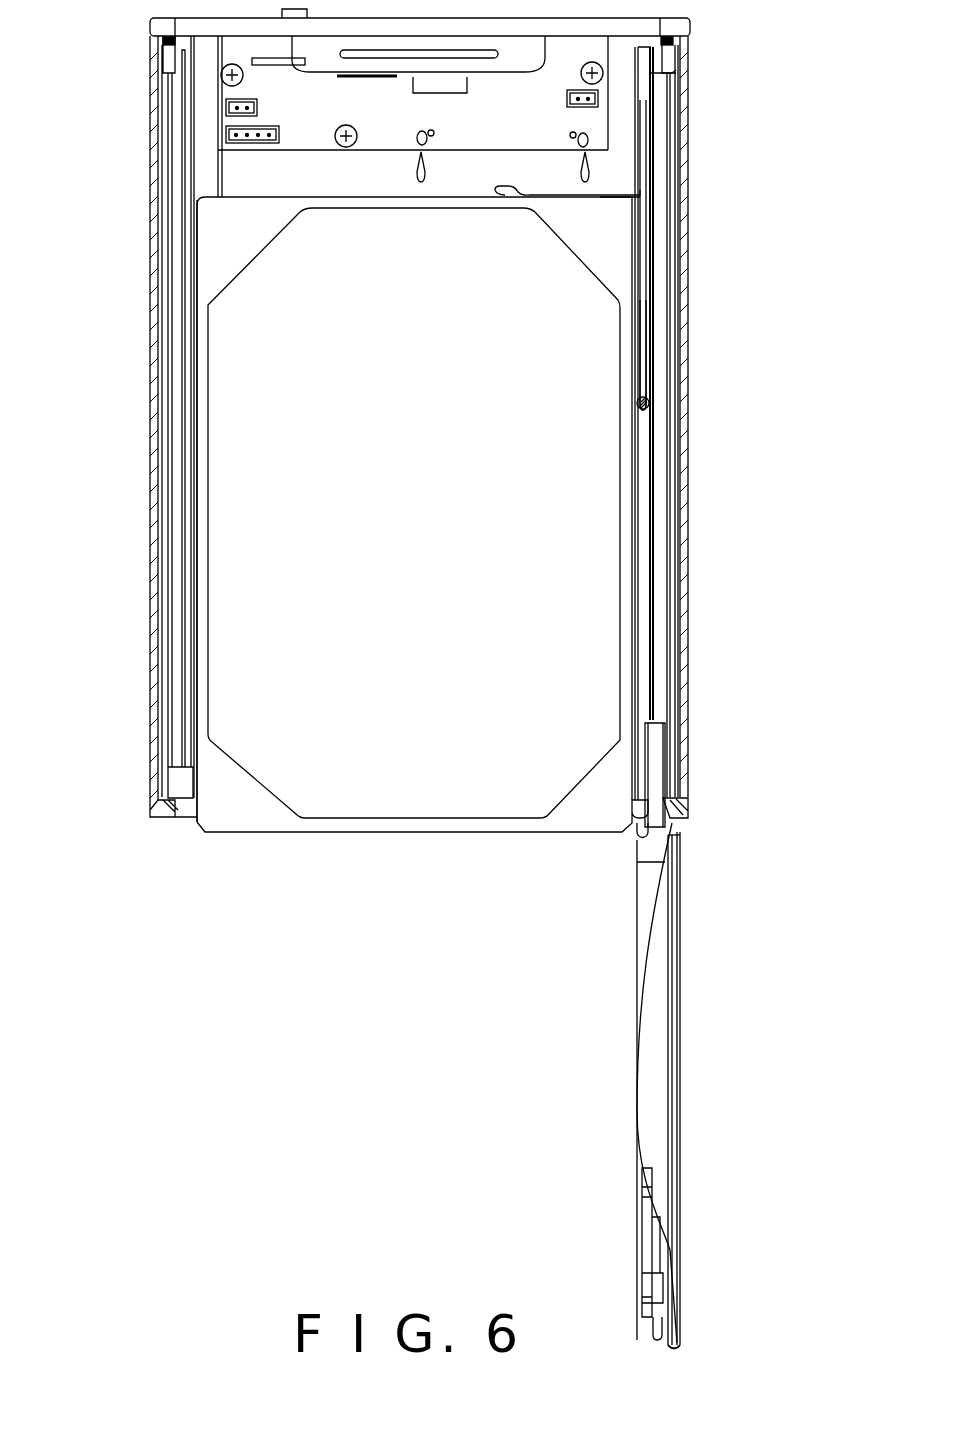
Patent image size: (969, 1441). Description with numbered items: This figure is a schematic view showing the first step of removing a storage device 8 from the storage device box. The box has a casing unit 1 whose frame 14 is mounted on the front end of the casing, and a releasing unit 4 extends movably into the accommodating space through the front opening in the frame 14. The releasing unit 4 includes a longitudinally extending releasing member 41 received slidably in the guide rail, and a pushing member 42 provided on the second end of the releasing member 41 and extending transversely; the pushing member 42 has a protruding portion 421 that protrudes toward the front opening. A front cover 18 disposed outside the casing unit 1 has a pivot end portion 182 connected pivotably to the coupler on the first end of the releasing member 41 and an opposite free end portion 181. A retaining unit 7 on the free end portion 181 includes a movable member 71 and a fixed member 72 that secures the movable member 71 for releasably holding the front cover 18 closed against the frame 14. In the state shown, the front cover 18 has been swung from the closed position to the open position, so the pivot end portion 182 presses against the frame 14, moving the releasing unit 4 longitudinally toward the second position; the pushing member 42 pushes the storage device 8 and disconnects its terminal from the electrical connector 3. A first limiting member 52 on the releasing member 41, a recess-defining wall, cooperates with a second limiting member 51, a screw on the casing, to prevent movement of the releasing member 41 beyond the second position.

The casing unit 1 is at (150, 572).
The frame 14 is at (152, 812).
The electrical connector 3 is at (460, 167).
The releasing unit 4 is at (642, 498).
The releasing member 41 is at (642, 623).
The pushing member 42 is at (600, 197).
The protruding portion 421 is at (520, 200).
The second limiting member 51 is at (647, 400).
The first limiting member 52 is at (648, 341).
The storage device 8 is at (525, 527).
The front cover 18 is at (655, 1073).
The free end portion 181 is at (678, 1308).
The pivot end portion 182 is at (678, 853).
The retaining unit 7 is at (584, 1254).
The movable member 71 is at (628, 1316).
The fixed member 72 is at (650, 1228).